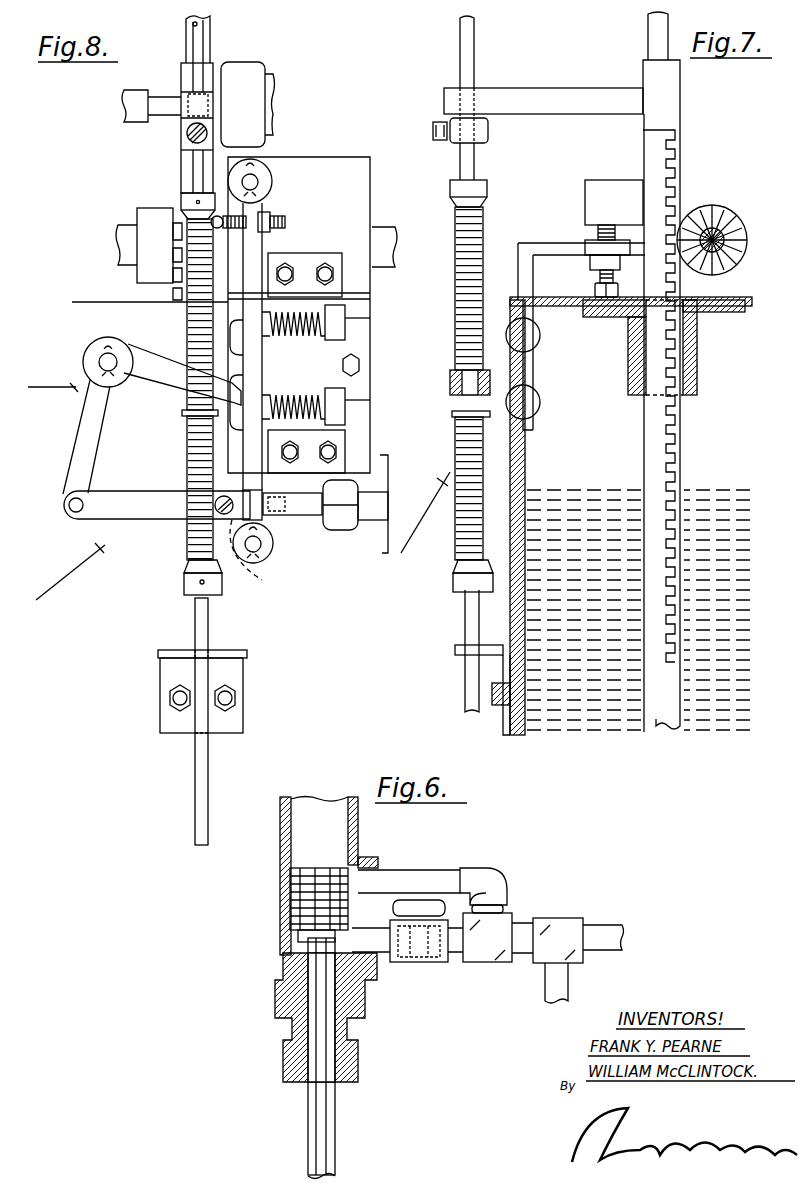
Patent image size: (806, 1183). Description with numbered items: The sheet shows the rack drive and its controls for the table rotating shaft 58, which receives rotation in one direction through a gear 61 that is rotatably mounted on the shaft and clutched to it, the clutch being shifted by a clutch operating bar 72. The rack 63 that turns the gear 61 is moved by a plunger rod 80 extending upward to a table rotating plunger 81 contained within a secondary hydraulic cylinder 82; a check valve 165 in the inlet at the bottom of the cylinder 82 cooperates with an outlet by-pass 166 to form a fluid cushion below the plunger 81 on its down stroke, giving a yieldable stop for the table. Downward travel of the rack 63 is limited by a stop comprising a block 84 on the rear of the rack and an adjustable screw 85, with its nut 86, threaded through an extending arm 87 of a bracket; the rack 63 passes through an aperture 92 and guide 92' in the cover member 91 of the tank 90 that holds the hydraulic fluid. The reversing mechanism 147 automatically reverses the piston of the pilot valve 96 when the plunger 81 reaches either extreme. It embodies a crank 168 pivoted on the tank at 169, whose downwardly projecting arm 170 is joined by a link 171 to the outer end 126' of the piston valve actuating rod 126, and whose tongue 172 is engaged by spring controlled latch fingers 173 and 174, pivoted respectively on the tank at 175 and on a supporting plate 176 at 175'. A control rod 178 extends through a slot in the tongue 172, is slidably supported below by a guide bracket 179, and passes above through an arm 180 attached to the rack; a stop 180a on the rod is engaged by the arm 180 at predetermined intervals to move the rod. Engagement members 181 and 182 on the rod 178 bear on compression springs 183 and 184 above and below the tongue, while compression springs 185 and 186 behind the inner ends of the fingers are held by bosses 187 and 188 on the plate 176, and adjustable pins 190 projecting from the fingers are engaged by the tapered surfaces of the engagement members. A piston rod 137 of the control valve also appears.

In FIG. 8, the rack 63 is at (210, 68).
In FIG. 7, the rack 63 is at (643, 76).
In FIG. 8, the control rod 178 is at (181, 72).
In FIG. 7, the control rod 178 is at (476, 57).
In FIG. 8, the arm 180 is at (213, 103).
In FIG. 7, the arm 180 is at (549, 88).
In FIG. 8, the stop 180a is at (207, 130).
In FIG. 7, the stop 180a is at (441, 133).
In FIG. 8, the clutch operating bar 72 is at (135, 122).
In FIG. 8, the piston rod 137 is at (163, 108).
In FIG. 8, the finger control engagement member 182 is at (187, 200).
In FIG. 7, the finger control engagement member 182 is at (488, 189).
In FIG. 8, the gear 61 is at (188, 219).
In FIG. 7, the gear 61 is at (731, 223).
In FIG. 8, the table rotating shaft 58 is at (120, 268).
In FIG. 7, the table rotating shaft 58 is at (724, 240).
In FIG. 8, the cover member 91 is at (92, 302).
In FIG. 7, the cover member 91 is at (562, 306).
In FIG. 8, the extending arm 87 is at (187, 296).
In FIG. 7, the extending arm 87 is at (535, 243).
In FIG. 8, the supporting plate 176 is at (361, 362).
In FIG. 8, the pivot 175' is at (271, 324).
In FIG. 8, the adjustable pins 190 is at (275, 223).
In FIG. 8, the latch finger 174 is at (246, 350).
In FIG. 8, the latch finger 173 is at (260, 399).
In FIG. 8, the compression spring 186 is at (305, 336).
In FIG. 8, the compression spring 185 is at (306, 394).
In FIG. 8, the boss 188 is at (370, 319).
In FIG. 8, the boss 187 is at (370, 399).
In FIG. 8, the compression spring 183 is at (187, 328).
In FIG. 8, the compression spring 184 is at (189, 462).
In FIG. 8, the finger control engagement member 181 is at (184, 583).
In FIG. 7, the finger control engagement member 181 is at (453, 584).
In FIG. 8, the guide bracket 179 is at (158, 661).
In FIG. 7, the guide bracket 179 is at (455, 653).
In FIG. 8, the pivot 169 is at (100, 366).
In FIG. 8, the tongue 172 is at (150, 367).
In FIG. 8, the downwardly projecting arm 170 is at (79, 440).
In FIG. 8, the crank 168 is at (53, 399).
In FIG. 8, the tank 90 is at (152, 428).
In FIG. 7, the tank 90 is at (518, 738).
In FIG. 8, the link 171 is at (153, 522).
In FIG. 8, the piston valve actuating rod 126 is at (325, 513).
In FIG. 8, the outer end of piston rod 126' is at (282, 513).
In FIG. 8, the pivot 175 is at (275, 543).
In FIG. 8, the pilot valve 96 is at (381, 556).
In FIG. 8, the reversing mechanism 147 is at (70, 580).
In FIG. 7, the reversing mechanism 147 is at (425, 514).
In FIG. 7, the plunger rod 80 is at (641, 24).
In FIG. 6, the plunger rod 80 is at (310, 1136).
In FIG. 7, the block 84 is at (607, 180).
In FIG. 7, the washer bar 86 is at (597, 262).
In FIG. 7, the adjustable screw 85 is at (593, 290).
In FIG. 7, the aperture 92 is at (645, 336).
In FIG. 7, the guide 92' is at (724, 347).
In FIG. 6, the secondary hydraulic cylinder 82 is at (280, 846).
In FIG. 6, the table rotating plunger 81 is at (297, 893).
In FIG. 6, the outlet by-pass 166 is at (427, 869).
In FIG. 6, the check valve 165 is at (424, 965).